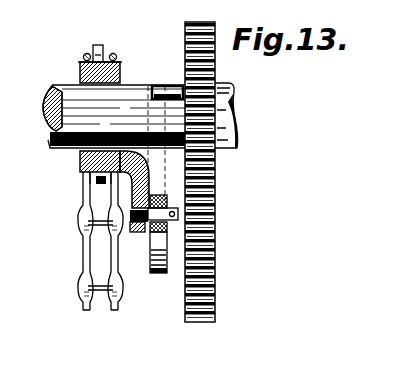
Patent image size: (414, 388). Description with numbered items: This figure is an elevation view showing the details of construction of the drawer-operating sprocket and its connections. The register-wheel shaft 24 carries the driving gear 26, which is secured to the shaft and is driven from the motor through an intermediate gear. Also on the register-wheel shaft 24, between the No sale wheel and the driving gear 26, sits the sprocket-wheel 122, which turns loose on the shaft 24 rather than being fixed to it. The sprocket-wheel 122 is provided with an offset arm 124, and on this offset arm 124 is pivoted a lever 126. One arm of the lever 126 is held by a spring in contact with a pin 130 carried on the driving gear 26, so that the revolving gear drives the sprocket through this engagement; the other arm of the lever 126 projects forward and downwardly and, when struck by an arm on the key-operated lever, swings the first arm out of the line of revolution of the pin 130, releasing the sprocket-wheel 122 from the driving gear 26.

The register-wheel shaft 24 is at (72, 113).
The driving gear 26 is at (217, 258).
The sprocket-wheel 122 is at (82, 66).
The offset arm 124 is at (125, 196).
The lever 126 is at (160, 246).
The pin 130 is at (165, 84).